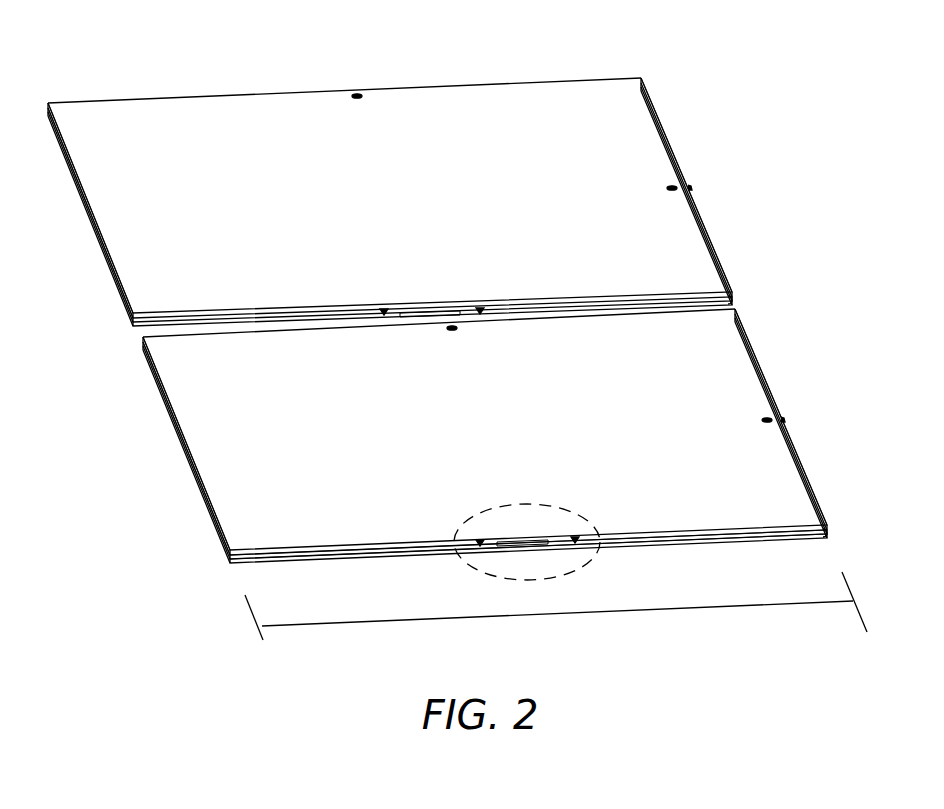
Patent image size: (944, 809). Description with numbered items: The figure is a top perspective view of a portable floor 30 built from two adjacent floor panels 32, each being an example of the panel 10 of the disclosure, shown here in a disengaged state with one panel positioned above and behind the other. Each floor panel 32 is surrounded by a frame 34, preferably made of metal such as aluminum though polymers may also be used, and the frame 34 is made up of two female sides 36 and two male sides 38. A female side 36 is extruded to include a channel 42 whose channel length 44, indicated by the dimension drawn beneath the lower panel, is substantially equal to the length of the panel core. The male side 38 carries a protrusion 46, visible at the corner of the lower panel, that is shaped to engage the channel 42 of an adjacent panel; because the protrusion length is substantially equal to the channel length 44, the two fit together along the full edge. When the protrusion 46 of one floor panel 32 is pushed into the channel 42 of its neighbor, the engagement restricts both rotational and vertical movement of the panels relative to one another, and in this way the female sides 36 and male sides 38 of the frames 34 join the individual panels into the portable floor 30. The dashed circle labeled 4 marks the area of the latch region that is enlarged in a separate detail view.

The panel 10 is at (521, 207).
The portable floor 30 is at (443, 320).
The floor panel 32 is at (775, 215).
The frame 34 is at (66, 167).
The female side 36 is at (69, 241).
The male side 38 is at (383, 75).
The channel 42 is at (805, 530).
The channel length 44 is at (553, 615).
The protrusion 46 is at (830, 527).
The detail area of FIG. 4 is at (590, 558).